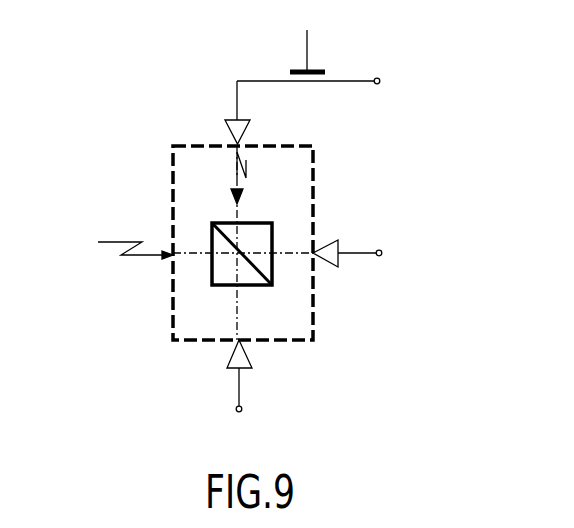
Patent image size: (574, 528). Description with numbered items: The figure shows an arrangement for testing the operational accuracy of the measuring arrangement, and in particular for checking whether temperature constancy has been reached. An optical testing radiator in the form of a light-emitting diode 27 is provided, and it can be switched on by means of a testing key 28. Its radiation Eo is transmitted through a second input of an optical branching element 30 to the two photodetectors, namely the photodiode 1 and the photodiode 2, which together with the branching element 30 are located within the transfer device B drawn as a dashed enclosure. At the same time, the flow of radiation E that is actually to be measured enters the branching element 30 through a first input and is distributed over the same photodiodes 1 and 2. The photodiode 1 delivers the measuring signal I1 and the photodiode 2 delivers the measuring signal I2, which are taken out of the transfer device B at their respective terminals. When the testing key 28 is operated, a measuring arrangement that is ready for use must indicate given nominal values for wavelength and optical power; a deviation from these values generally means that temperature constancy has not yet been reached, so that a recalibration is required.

The transfer device B is at (176, 145).
The testing key 28 is at (307, 48).
The light-emitting diode 27 is at (250, 126).
The radiation of the light-emitting diode Eo is at (246, 163).
The optical branching element 30 is at (258, 224).
The flow of radiation E is at (124, 232).
The photodetector 1 is at (326, 246).
The measuring signal I1 is at (414, 264).
The photodetector 2 is at (250, 361).
The measuring signal I2 is at (240, 412).